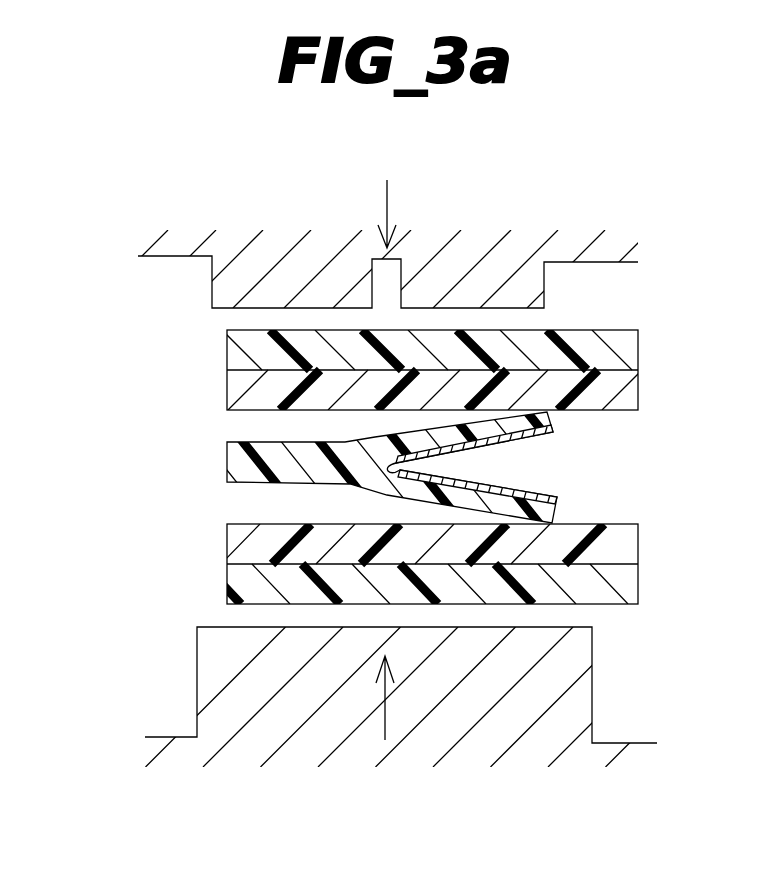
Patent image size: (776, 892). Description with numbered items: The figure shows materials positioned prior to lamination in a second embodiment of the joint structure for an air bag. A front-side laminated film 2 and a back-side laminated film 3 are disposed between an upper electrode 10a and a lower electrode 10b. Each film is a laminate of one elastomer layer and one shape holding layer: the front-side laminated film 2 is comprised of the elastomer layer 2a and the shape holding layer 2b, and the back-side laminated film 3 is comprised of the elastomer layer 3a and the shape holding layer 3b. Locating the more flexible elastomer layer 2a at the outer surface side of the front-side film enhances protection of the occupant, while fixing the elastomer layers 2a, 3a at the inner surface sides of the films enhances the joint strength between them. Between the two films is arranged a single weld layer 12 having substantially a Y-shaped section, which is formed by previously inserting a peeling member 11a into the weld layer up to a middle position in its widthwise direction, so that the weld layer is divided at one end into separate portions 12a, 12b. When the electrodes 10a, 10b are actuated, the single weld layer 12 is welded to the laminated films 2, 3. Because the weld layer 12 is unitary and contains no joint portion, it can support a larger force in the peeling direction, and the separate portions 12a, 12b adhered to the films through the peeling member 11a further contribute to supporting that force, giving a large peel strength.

The front-side laminated film 2 is at (362, 291).
The elastomer layer 2a is at (232, 343).
The shape holding layer 2b is at (227, 383).
The back-side laminated film 3 is at (363, 685).
The elastomer layer 3a is at (226, 580).
The shape holding layer 3b is at (233, 537).
The electrode 10a is at (460, 285).
The electrode 10b is at (485, 682).
The weld layer 12 is at (418, 477).
The separate portion of the weld layer 12a is at (553, 424).
The separate portion of the weld layer 12b is at (553, 515).
The peeling member 11a is at (553, 503).